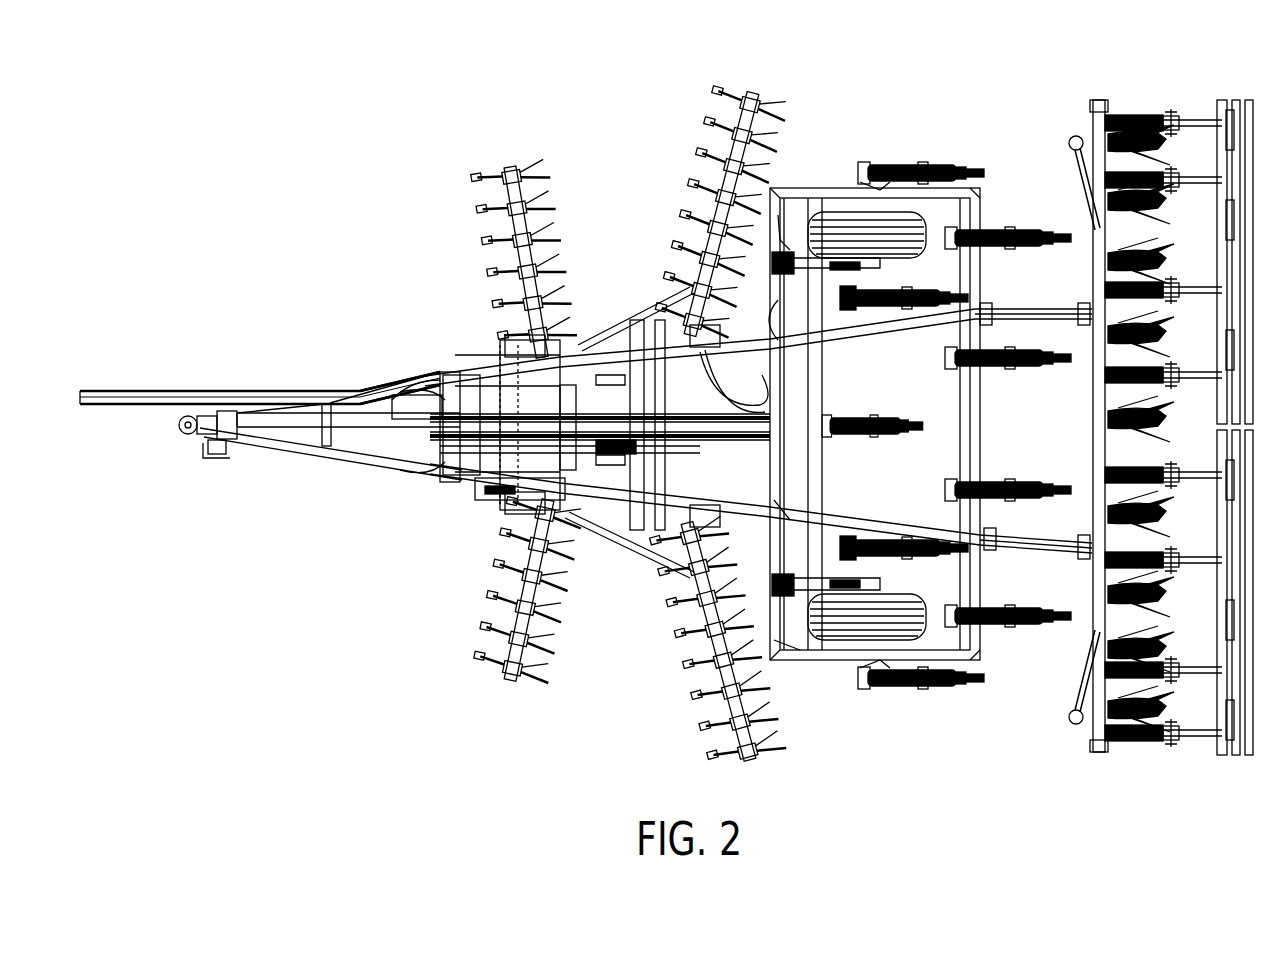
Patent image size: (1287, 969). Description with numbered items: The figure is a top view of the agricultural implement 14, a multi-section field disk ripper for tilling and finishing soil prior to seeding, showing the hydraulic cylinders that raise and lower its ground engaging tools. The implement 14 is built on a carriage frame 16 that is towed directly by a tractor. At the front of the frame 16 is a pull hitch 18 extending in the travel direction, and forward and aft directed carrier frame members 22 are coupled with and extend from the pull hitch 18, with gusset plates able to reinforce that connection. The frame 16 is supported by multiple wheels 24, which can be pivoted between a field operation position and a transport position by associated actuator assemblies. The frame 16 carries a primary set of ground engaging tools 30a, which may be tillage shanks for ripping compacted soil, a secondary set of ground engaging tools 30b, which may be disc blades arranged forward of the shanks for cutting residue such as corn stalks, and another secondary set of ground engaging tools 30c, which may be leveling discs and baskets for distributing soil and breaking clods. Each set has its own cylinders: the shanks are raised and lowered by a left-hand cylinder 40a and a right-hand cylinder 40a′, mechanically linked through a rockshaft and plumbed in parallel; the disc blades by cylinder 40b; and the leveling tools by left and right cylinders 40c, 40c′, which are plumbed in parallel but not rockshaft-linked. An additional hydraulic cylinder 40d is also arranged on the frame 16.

The agricultural implement 14 is at (303, 179).
The carriage frame 16 is at (428, 346).
The pull hitch 18 is at (248, 445).
The carrier frame members 22 is at (484, 372).
The wheels 24 is at (840, 225).
The primary set of ground engaging tools 30a is at (935, 140).
The secondary set of ground engaging tools 30b is at (766, 68).
The secondary set of ground engaging tools 30c is at (1148, 84).
The hydraulic cylinder 40a is at (828, 565).
The hydraulic cylinder 40a′ is at (828, 296).
The hydraulic cylinder 40b is at (535, 500).
The hydraulic cylinder 40c is at (1012, 545).
The hydraulic cylinder 40c′ is at (1020, 316).
The hydraulic cylinder 40d is at (400, 410).